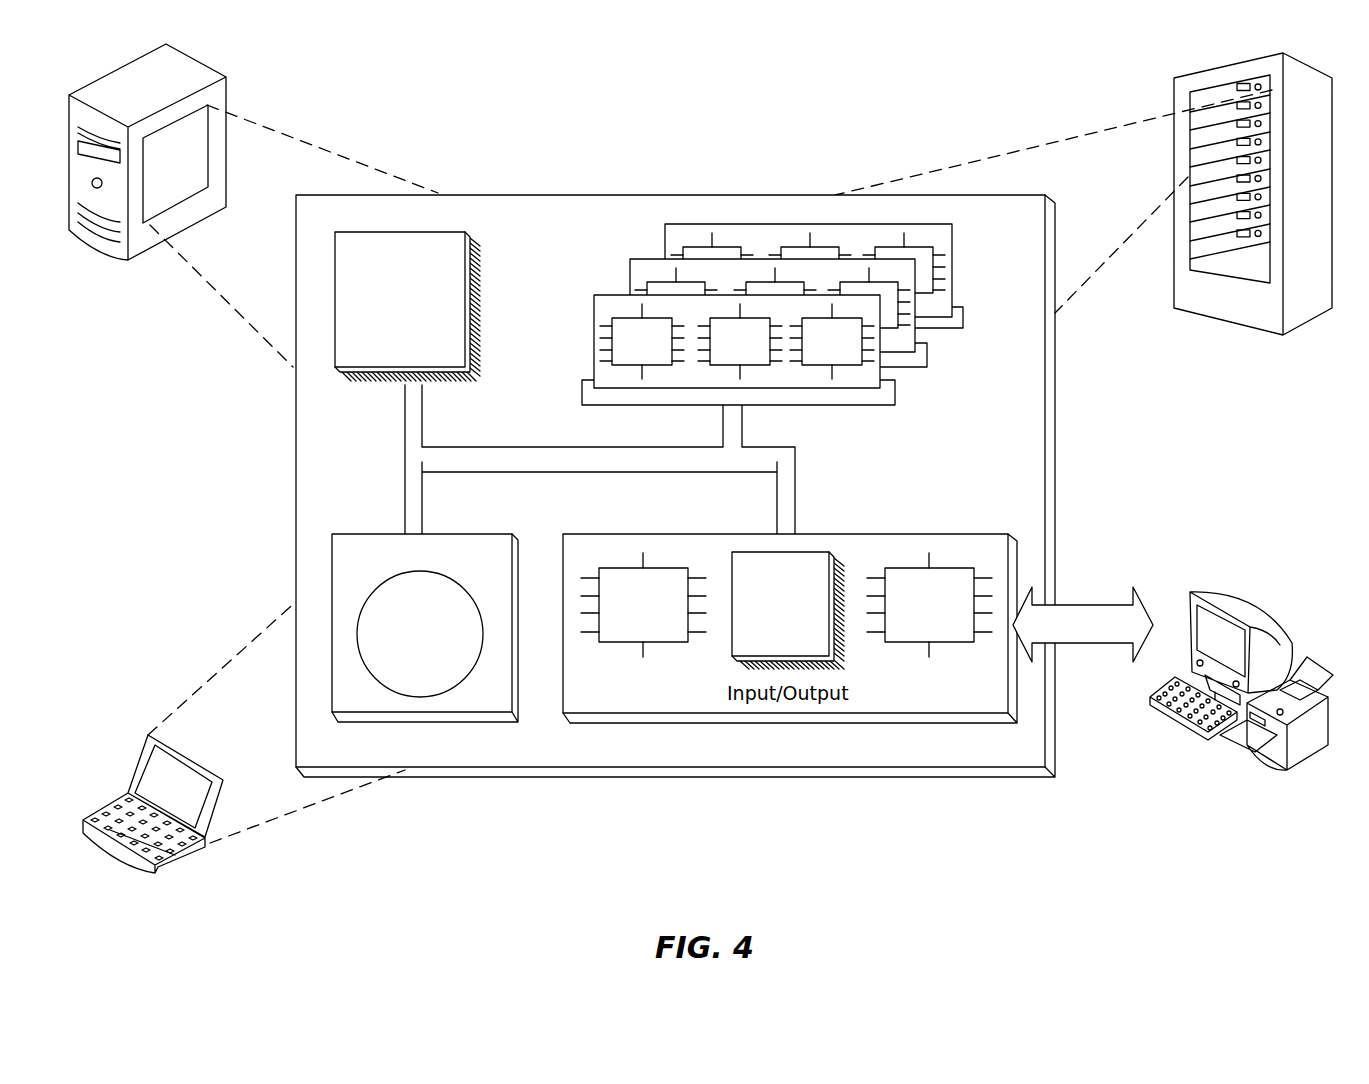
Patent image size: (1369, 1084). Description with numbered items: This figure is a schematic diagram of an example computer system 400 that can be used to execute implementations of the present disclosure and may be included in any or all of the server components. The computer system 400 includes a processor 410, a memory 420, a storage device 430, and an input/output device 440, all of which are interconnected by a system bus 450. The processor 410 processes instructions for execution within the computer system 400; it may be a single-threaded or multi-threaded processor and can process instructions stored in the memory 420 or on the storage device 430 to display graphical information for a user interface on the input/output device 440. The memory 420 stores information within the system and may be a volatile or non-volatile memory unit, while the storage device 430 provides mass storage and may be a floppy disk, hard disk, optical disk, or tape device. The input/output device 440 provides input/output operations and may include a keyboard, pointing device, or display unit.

The computer system 400 is at (500, 128).
The processor 410 is at (407, 306).
The memory 420 is at (958, 368).
The storage device 430 is at (425, 628).
The input/output device 440 is at (1185, 595).
The system bus 450 is at (595, 463).